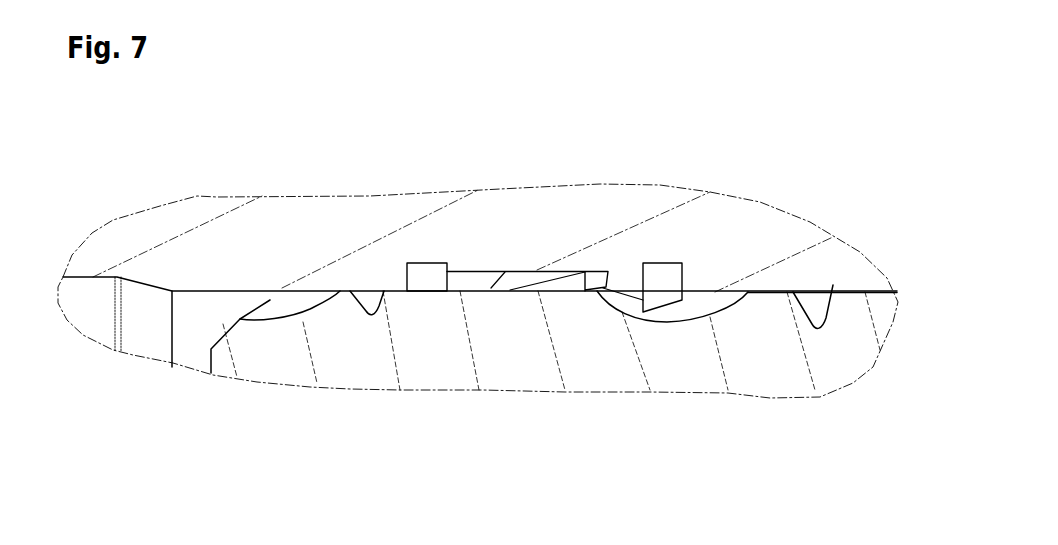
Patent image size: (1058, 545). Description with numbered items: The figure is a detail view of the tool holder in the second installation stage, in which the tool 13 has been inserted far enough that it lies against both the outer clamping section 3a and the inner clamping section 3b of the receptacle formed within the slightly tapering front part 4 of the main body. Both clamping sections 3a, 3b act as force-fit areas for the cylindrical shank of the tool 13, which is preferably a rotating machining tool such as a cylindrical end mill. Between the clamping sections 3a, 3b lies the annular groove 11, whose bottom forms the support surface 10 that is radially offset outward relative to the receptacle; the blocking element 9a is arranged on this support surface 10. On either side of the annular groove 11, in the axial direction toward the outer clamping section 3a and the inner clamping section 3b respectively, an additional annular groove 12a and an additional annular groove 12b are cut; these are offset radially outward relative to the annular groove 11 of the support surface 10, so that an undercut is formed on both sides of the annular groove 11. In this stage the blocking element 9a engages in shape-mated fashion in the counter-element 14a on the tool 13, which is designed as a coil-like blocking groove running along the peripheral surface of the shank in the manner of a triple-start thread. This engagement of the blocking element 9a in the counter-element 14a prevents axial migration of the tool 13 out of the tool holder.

The outer clamping section 3a is at (833, 285).
The inner clamping section 3b is at (350, 291).
The front part 4 is at (775, 220).
The blocking element 9a is at (627, 283).
The support surface 10 is at (492, 288).
The annular groove 11 is at (463, 282).
The additional annular groove 12a is at (665, 273).
The additional annular groove 12b is at (420, 273).
The tool 13 is at (768, 373).
The counter-element 14a is at (690, 313).